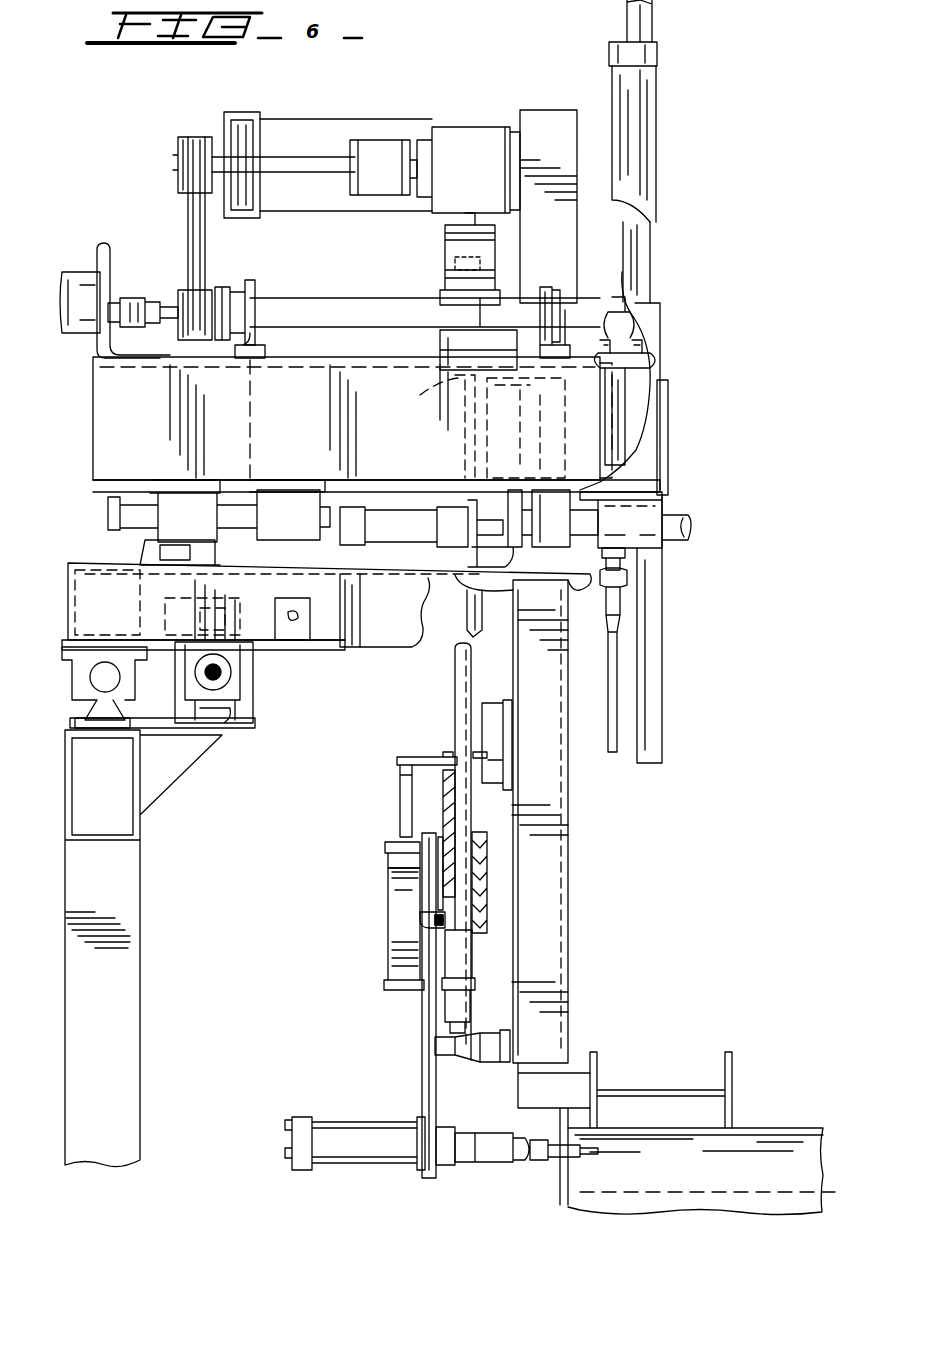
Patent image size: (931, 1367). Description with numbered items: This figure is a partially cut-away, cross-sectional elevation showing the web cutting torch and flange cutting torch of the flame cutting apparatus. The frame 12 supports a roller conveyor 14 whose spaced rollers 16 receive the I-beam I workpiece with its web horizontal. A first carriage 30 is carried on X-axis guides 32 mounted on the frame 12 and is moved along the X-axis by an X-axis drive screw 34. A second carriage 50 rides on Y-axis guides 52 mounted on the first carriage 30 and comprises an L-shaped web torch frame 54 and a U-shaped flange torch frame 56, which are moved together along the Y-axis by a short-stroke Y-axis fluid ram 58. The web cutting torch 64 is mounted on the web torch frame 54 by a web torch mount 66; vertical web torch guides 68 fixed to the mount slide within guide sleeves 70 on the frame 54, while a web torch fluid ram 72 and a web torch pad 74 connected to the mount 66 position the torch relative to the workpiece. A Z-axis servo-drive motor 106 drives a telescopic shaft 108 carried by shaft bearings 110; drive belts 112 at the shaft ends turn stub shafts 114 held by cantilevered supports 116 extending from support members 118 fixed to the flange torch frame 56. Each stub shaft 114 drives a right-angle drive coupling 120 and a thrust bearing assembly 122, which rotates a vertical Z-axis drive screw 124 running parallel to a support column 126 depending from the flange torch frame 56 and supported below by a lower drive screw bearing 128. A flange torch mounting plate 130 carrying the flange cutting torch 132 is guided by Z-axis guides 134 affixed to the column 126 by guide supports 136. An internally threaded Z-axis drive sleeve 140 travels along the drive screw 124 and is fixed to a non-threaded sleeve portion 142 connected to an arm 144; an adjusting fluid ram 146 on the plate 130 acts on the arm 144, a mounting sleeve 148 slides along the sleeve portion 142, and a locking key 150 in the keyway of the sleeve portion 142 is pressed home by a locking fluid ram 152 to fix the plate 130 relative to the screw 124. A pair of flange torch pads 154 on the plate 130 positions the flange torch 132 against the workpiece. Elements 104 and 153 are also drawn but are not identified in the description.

The frame 12 is at (130, 982).
The roller conveyor 14 is at (560, 1186).
The rollers 16 is at (780, 1140).
The first carriage 30 is at (70, 575).
The X-axis guides 32 is at (102, 663).
The X-axis drive screw 34 is at (222, 672).
The second carriage 50 is at (346, 356).
The Y-axis guides 52 is at (232, 525).
The web torch frame 54 is at (668, 385).
The flange torch frame 56 is at (303, 432).
The Y-axis fluid ram 58 is at (405, 522).
The web cutting torch 64 is at (612, 660).
The web torch mount 66 is at (662, 505).
The web torch guides 68 is at (650, 250).
The guide sleeves 70 is at (650, 305).
The web torch fluid ram 72 is at (650, 125).
The web torch pad 74 is at (658, 745).
The shaft coupling 104 is at (143, 312).
The Z-axis servo-drive motor 106 is at (78, 270).
The Z-axis telescopic shaft 108 is at (420, 305).
The shaft bearings 110 is at (252, 288).
The drive belts 112 is at (200, 236).
The stub shafts 114 is at (290, 165).
The cantilevered supports 116 is at (345, 140).
The support members 118 is at (540, 112).
The right-angle drive couplings 120 is at (475, 145).
The thrust bearing assemblies 122 is at (450, 340).
The Z-axis drive screw 124 is at (520, 668).
The support column 126 is at (565, 868).
The lower drive screw bearing 128 is at (470, 1052).
The flange torch mounting plate 130 is at (422, 1075).
The flange cutting torch 132 is at (495, 1150).
The Z-axis guides 134 is at (510, 440).
The guide supports 136 is at (490, 710).
The Z-axis drive sleeve 140 is at (470, 965).
The sleeve portion 142 is at (443, 800).
The arm 144 is at (408, 757).
The adjusting fluid ram 146 is at (395, 855).
The mounting sleeve 148 is at (482, 880).
The locking key 150 is at (430, 930).
The locking fluid ram 152 is at (400, 896).
The air cylinder 153 is at (358, 1160).
The flange torch pads 154 is at (446, 1160).
The I-beam I is at (735, 1060).